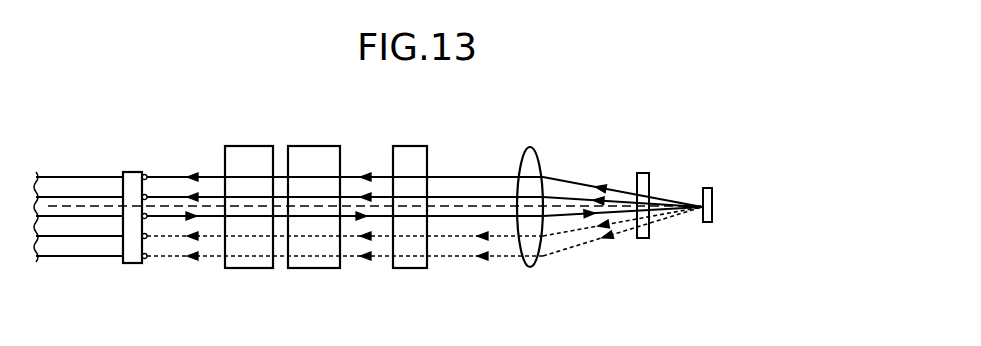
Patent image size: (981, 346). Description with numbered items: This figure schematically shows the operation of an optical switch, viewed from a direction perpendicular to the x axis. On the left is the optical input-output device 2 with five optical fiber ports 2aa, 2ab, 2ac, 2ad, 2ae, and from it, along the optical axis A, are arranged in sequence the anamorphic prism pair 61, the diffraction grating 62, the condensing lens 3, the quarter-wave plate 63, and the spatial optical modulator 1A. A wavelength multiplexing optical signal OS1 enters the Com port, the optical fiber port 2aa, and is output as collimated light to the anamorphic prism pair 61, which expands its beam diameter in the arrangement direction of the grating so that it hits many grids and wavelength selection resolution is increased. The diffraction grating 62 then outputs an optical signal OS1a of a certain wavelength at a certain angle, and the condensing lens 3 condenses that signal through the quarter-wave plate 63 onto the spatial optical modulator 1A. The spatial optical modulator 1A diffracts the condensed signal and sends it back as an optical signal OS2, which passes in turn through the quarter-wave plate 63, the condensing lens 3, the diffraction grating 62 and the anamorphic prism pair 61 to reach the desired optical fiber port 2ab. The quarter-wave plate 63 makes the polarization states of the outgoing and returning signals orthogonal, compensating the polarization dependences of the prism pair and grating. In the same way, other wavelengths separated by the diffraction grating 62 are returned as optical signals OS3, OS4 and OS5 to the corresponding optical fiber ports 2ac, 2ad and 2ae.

The optical input-output device 2 is at (86, 224).
The optical fiber port 2aa is at (51, 217).
The optical fiber port 2ab is at (52, 190).
The optical fiber port 2ac is at (104, 177).
The optical fiber port 2ad is at (78, 237).
The optical fiber port 2ae is at (100, 257).
The wavelength multiplexing optical signal OS1 is at (165, 218).
The optical signal OS2 is at (157, 190).
The optical signal OS3 is at (180, 176).
The optical signal OS4 is at (202, 238).
The optical signal OS5 is at (178, 258).
The optical signal OS1a is at (500, 217).
The optical axis A is at (452, 206).
The anamorphic prism pair 61 is at (282, 288).
The diffraction grating 62 is at (413, 269).
The condensing lens 3 is at (530, 268).
The quarter-wave plate 63 is at (643, 240).
The spatial optical modulator 1A is at (708, 223).